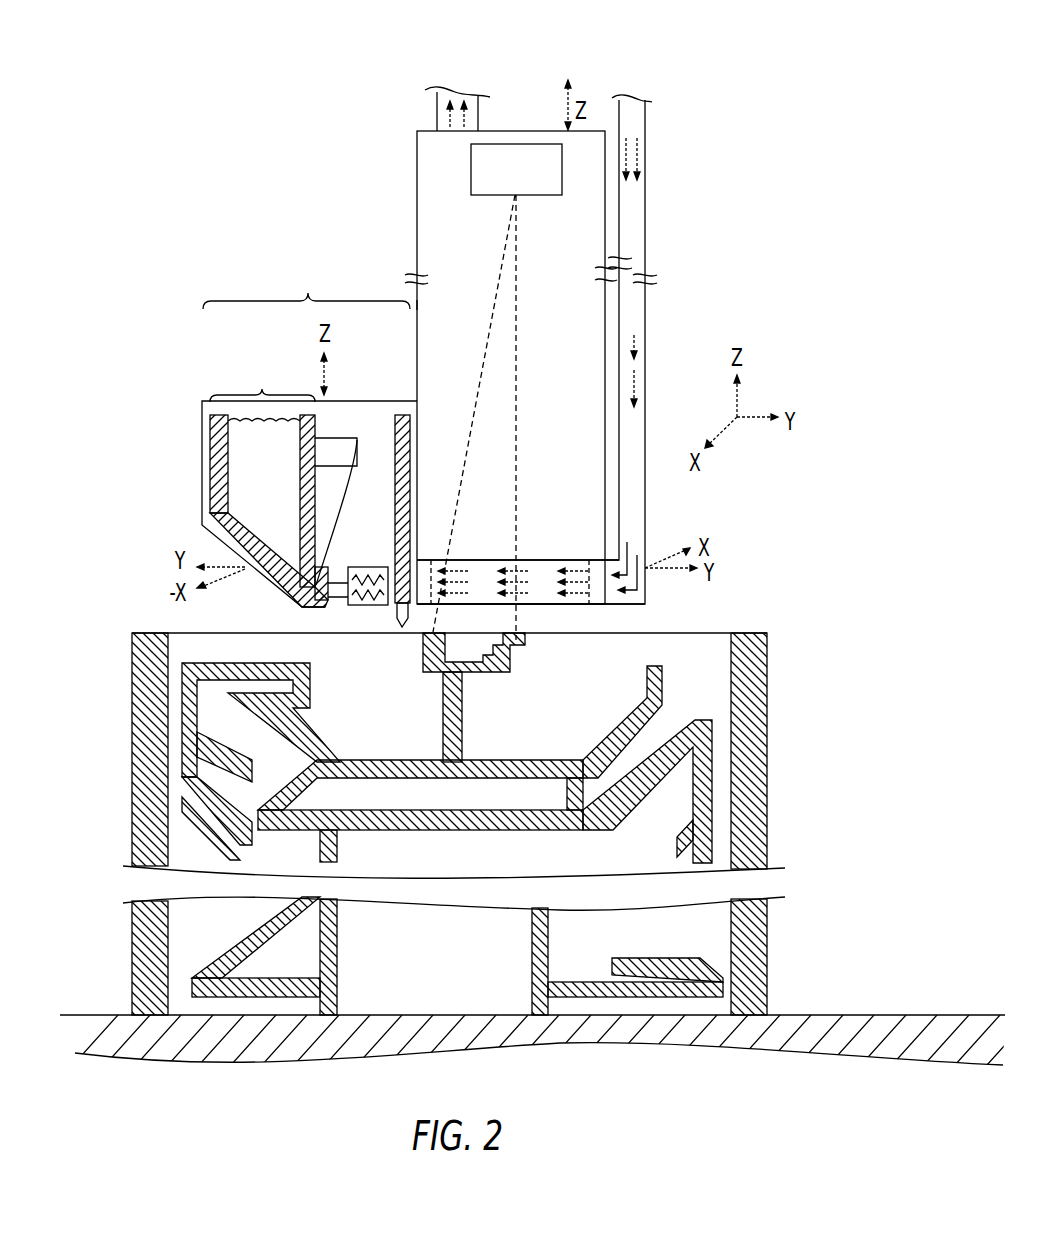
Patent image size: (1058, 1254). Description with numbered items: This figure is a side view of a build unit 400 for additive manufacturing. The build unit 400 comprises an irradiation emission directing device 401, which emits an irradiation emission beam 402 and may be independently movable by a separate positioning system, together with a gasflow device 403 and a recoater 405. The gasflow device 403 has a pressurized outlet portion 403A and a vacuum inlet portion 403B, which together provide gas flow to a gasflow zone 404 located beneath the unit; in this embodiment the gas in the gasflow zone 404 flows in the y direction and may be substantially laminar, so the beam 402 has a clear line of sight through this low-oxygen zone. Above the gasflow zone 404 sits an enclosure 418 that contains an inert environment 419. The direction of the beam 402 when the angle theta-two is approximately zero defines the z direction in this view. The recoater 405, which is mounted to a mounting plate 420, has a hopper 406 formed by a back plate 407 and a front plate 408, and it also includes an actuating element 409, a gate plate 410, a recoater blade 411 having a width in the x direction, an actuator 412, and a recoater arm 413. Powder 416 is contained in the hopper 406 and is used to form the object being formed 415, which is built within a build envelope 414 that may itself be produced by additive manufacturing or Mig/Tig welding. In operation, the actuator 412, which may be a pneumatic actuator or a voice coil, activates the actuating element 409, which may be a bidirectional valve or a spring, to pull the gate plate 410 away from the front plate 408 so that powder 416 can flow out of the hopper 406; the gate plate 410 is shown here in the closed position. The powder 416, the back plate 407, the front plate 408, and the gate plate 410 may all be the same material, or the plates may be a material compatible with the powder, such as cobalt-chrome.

The build unit 400 is at (690, 89).
The irradiation emission directing device 401 is at (516, 144).
The irradiation emission beam 402 is at (517, 300).
The gasflow device 403 is at (580, 605).
The pressurized outlet portion 403A is at (598, 568).
The vacuum inlet portion 403B is at (423, 568).
The gasflow zone 404 is at (543, 570).
The recoater 405 is at (306, 284).
The hopper 406 is at (262, 378).
The back plate 407 is at (210, 460).
The front plate 408 is at (318, 432).
The actuating element 409 is at (343, 495).
The gate plate 410 is at (326, 604).
The recoater blade 411 is at (395, 610).
The actuator 412 is at (366, 567).
The recoater arm 413 is at (400, 414).
The build envelope 414 is at (767, 776).
The object being formed 415 is at (663, 676).
The powder 416 is at (242, 420).
The enclosure 418 is at (417, 203).
The inert environment 419 is at (417, 307).
The mounting plate 420 is at (202, 426).